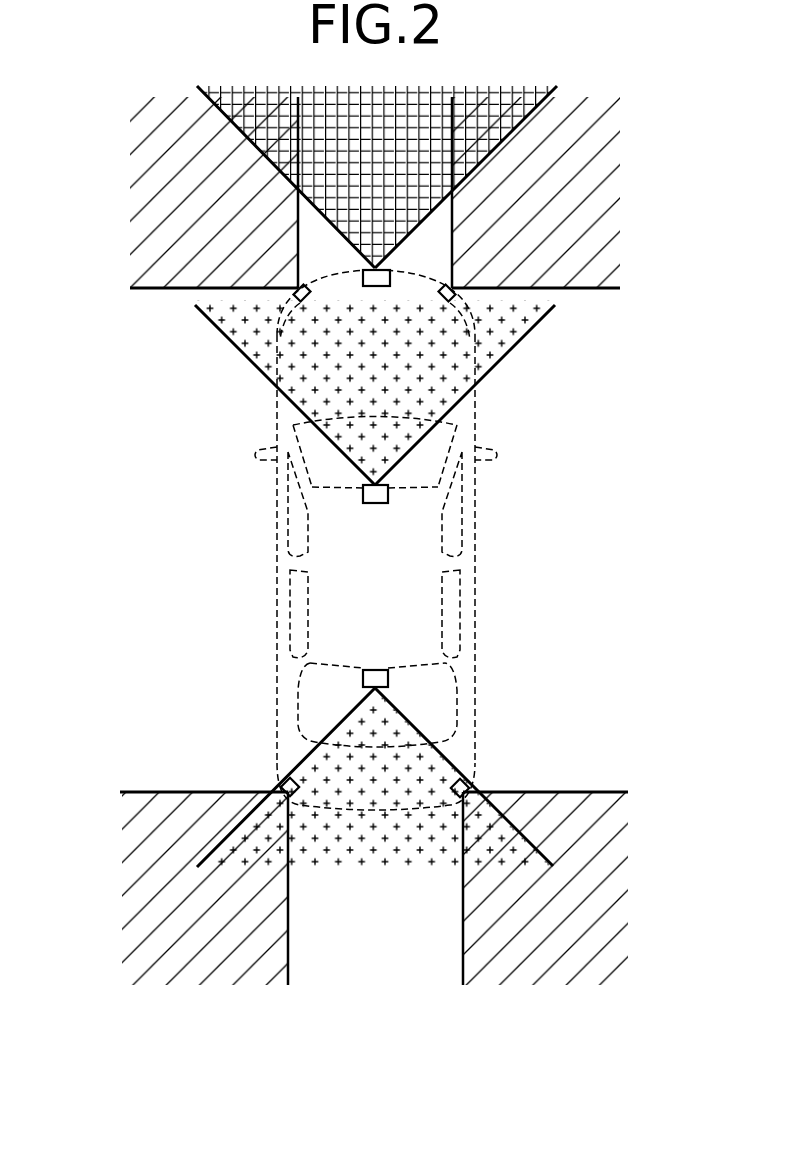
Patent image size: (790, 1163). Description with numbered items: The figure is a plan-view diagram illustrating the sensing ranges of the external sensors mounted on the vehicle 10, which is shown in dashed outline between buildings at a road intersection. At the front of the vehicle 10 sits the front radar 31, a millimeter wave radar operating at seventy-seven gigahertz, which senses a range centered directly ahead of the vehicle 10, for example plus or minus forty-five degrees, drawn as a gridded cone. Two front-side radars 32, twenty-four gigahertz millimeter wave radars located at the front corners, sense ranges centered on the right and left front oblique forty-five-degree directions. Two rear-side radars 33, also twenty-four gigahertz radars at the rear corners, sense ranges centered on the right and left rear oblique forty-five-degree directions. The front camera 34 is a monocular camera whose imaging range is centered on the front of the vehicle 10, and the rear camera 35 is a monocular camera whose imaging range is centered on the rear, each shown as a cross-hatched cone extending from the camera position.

The vehicle 10 is at (477, 563).
The front radar 31 is at (390, 270).
The front-side radars 32 is at (667, 300).
The rear-side radars 33 is at (468, 780).
The front camera 34 is at (388, 492).
The rear camera 35 is at (388, 676).